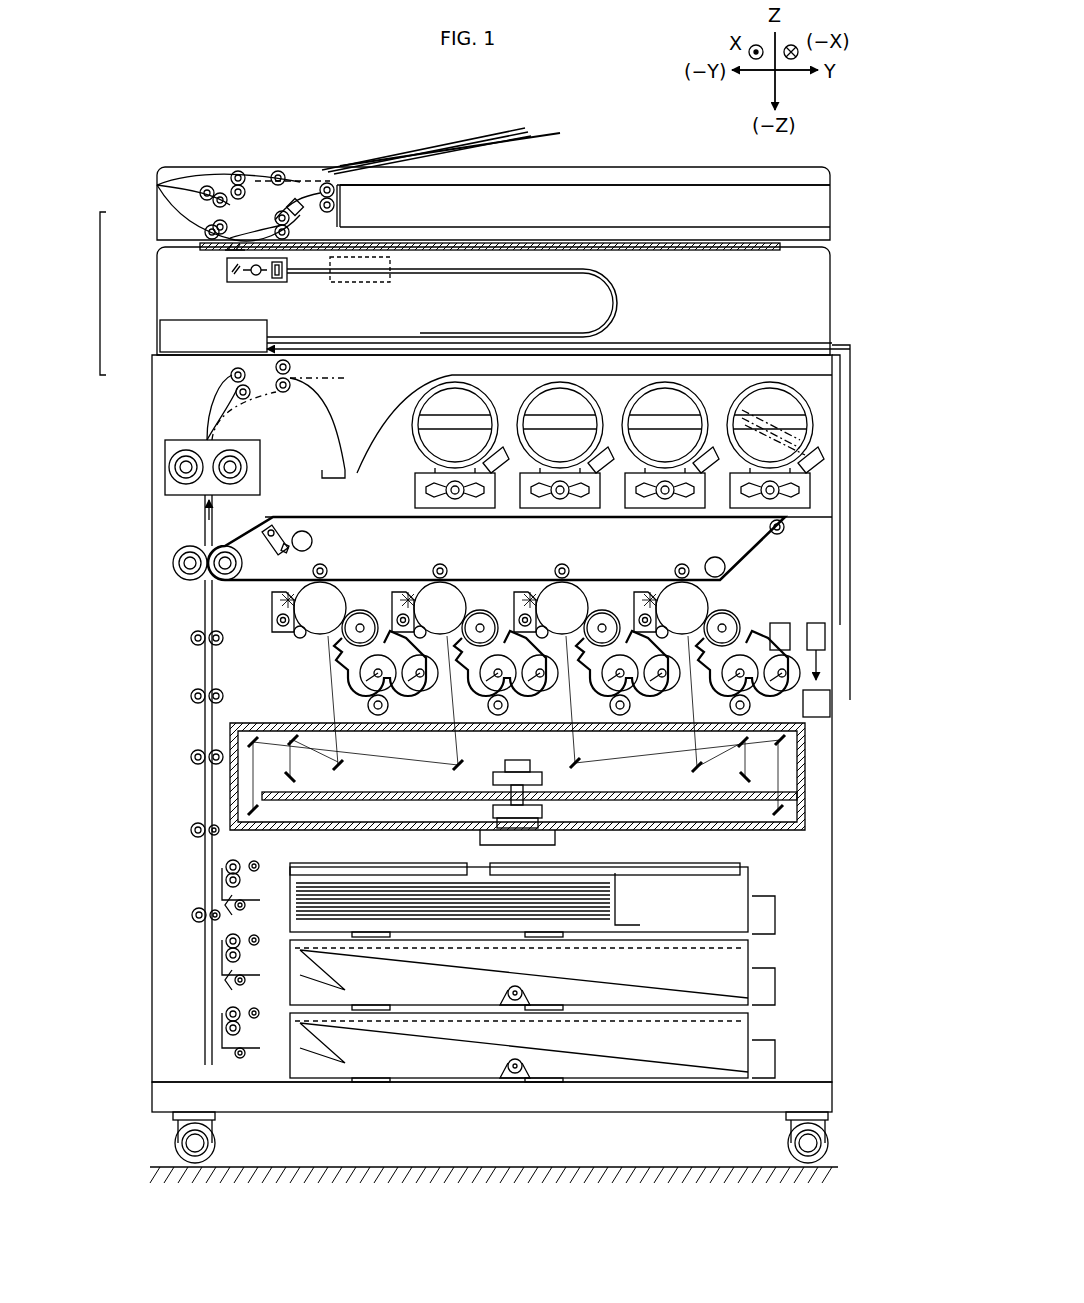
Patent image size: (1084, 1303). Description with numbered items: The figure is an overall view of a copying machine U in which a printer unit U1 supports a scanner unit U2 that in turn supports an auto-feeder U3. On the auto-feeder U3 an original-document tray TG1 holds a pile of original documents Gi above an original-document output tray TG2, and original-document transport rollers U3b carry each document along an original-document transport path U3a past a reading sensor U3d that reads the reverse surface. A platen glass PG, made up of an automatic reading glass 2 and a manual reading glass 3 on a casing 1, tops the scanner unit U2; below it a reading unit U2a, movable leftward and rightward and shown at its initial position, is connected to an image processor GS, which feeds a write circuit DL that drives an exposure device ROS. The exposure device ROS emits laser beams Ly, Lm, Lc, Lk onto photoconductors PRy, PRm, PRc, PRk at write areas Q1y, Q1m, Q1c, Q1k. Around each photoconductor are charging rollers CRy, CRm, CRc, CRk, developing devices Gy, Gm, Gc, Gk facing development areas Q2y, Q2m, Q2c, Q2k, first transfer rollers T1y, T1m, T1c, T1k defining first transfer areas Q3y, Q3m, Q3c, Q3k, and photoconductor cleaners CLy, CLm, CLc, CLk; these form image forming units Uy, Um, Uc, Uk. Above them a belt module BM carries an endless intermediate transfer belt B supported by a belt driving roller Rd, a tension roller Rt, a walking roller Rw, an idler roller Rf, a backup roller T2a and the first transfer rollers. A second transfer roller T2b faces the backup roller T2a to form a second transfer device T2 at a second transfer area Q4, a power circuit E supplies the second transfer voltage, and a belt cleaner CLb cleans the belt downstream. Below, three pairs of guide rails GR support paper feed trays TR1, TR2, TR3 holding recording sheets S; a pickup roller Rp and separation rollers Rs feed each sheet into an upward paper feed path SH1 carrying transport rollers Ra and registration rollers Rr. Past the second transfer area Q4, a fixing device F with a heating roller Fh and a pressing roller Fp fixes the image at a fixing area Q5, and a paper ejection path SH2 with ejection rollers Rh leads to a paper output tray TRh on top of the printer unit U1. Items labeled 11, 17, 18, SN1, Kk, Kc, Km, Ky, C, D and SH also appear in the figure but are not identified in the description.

The casing 1 is at (157, 317).
The automatic reading glass 2 is at (224, 249).
The manual reading glass 3 is at (665, 243).
The image reading sensor unit 11 is at (236, 282).
The guide rail 17 is at (405, 274).
The housing 18 is at (452, 268).
The copying machine U is at (100, 294).
The printer unit U1 is at (170, 371).
The scanner unit U2 is at (170, 266).
The reading unit U2a is at (278, 285).
The auto-feeder U3 is at (170, 230).
The original-document transport path U3a is at (260, 172).
The original-document transport rollers U3b is at (157, 184).
The reading sensor U3d is at (267, 211).
The original documents Gi is at (430, 147).
The original-document tray TG1 is at (537, 132).
The original-document output tray TG2 is at (530, 227).
The platen glass PG is at (732, 250).
The document sensor SN1 is at (329, 188).
The image processor GS is at (178, 335).
The paper output tray TRh is at (410, 405).
The toner cartridge black Kk is at (452, 392).
The toner cartridge cyan Kc is at (560, 392).
The toner cartridge magenta Km is at (662, 392).
The toner cartridge yellow Ky is at (778, 400).
The C-color image forming unit Uc is at (475, 410).
The M-color image forming unit Um is at (580, 410).
The Y-color image forming unit Uy is at (683, 410).
The K-color image forming unit Uk is at (357, 524).
The intermediate transfer belt B is at (323, 470).
The belt module BM is at (363, 508).
The belt driving roller Rd is at (785, 525).
The idler roller Rf is at (716, 558).
The photoconductor PRk is at (312, 632).
The photoconductor PRc is at (432, 583).
The photoconductor PRm is at (554, 583).
The photoconductor PRy is at (676, 583).
The first transfer roller T1k is at (312, 568).
The first transfer roller T1c is at (438, 564).
The first transfer roller T1m is at (561, 564).
The first transfer roller T1y is at (682, 564).
The photoconductor cleaner CLk is at (272, 597).
The photoconductor cleaner CLc is at (406, 596).
The photoconductor cleaner CLm is at (528, 596).
The photoconductor cleaner CLy is at (650, 596).
The belt cleaner CLb is at (800, 555).
The charging roller CRk is at (277, 622).
The charging roller CRc is at (400, 620).
The charging roller CRm is at (525, 625).
The charging roller CRy is at (647, 622).
The developing device Gk is at (345, 705).
The developing device Gc is at (468, 705).
The developing device Gm is at (590, 699).
The developing device Gy is at (713, 705).
The write area Q1k is at (326, 636).
The write area Q1c is at (446, 636).
The write area Q1m is at (568, 636).
The write area Q1y is at (688, 636).
The development area Q2k is at (332, 640).
The development area Q2c is at (466, 620).
The development area Q2m is at (590, 620).
The development area Q2y is at (720, 595).
The first transfer area Q3k is at (335, 565).
The first transfer area Q3c is at (455, 566).
The first transfer area Q3m is at (572, 566).
The first transfer area Q3y is at (690, 566).
The second transfer area Q4 is at (203, 583).
The fixing area Q5 is at (189, 520).
The power circuit E is at (792, 636).
The controller C is at (827, 640).
The write circuit DL is at (832, 712).
The exposure device ROS is at (262, 722).
The laser beam Lk is at (335, 742).
The laser beam Lc is at (458, 742).
The laser beam Lm is at (570, 742).
The laser beam Ly is at (800, 770).
The fixing device F is at (236, 443).
The heating roller Fh is at (248, 458).
The pressing roller Fp is at (186, 458).
The discharge direction D is at (214, 413).
The paper ejection path SH2 is at (228, 390).
The ejection rollers Rh is at (283, 396).
The tension roller Rt is at (274, 526).
The walking roller Rw is at (302, 530).
The backup roller T2a is at (225, 546).
The second transfer roller T2b is at (173, 562).
The second transfer device T2 is at (170, 573).
The paper feed path SH1 is at (205, 655).
The registration rollers Rr is at (190, 636).
The transport rollers Ra is at (190, 757).
The paper feed tray TR1 is at (748, 903).
The paper feed tray TR2 is at (490, 956).
The paper feed tray TR3 is at (490, 1031).
The recording sheets S is at (366, 888).
The guide rails GR is at (210, 930).
The pickup roller Rp is at (248, 862).
The separation rollers Rs is at (222, 880).
The sheet transport path SH is at (212, 1010).